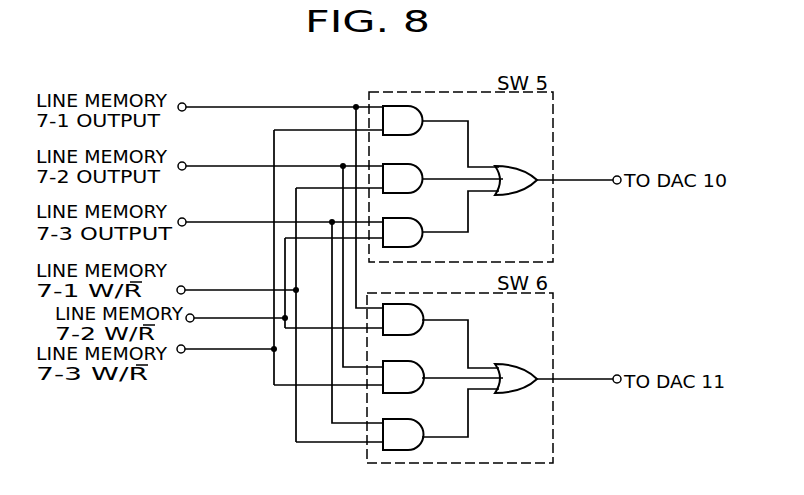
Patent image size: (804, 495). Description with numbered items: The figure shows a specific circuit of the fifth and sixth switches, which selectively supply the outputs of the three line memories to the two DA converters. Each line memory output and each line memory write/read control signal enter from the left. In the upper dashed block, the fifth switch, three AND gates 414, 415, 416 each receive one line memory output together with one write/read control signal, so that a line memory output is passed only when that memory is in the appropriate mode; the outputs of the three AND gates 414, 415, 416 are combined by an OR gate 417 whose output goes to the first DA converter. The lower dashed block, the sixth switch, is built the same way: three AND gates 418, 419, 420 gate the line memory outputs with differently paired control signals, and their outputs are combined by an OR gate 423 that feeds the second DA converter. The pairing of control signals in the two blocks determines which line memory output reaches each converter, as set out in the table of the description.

The AND gate 414 is at (424, 107).
The AND gate 415 is at (422, 166).
The AND gate 416 is at (422, 223).
The OR gate 417 is at (512, 165).
The AND gate 418 is at (424, 308).
The AND gate 419 is at (422, 367).
The AND gate 420 is at (422, 423).
The OR gate 423 is at (504, 364).